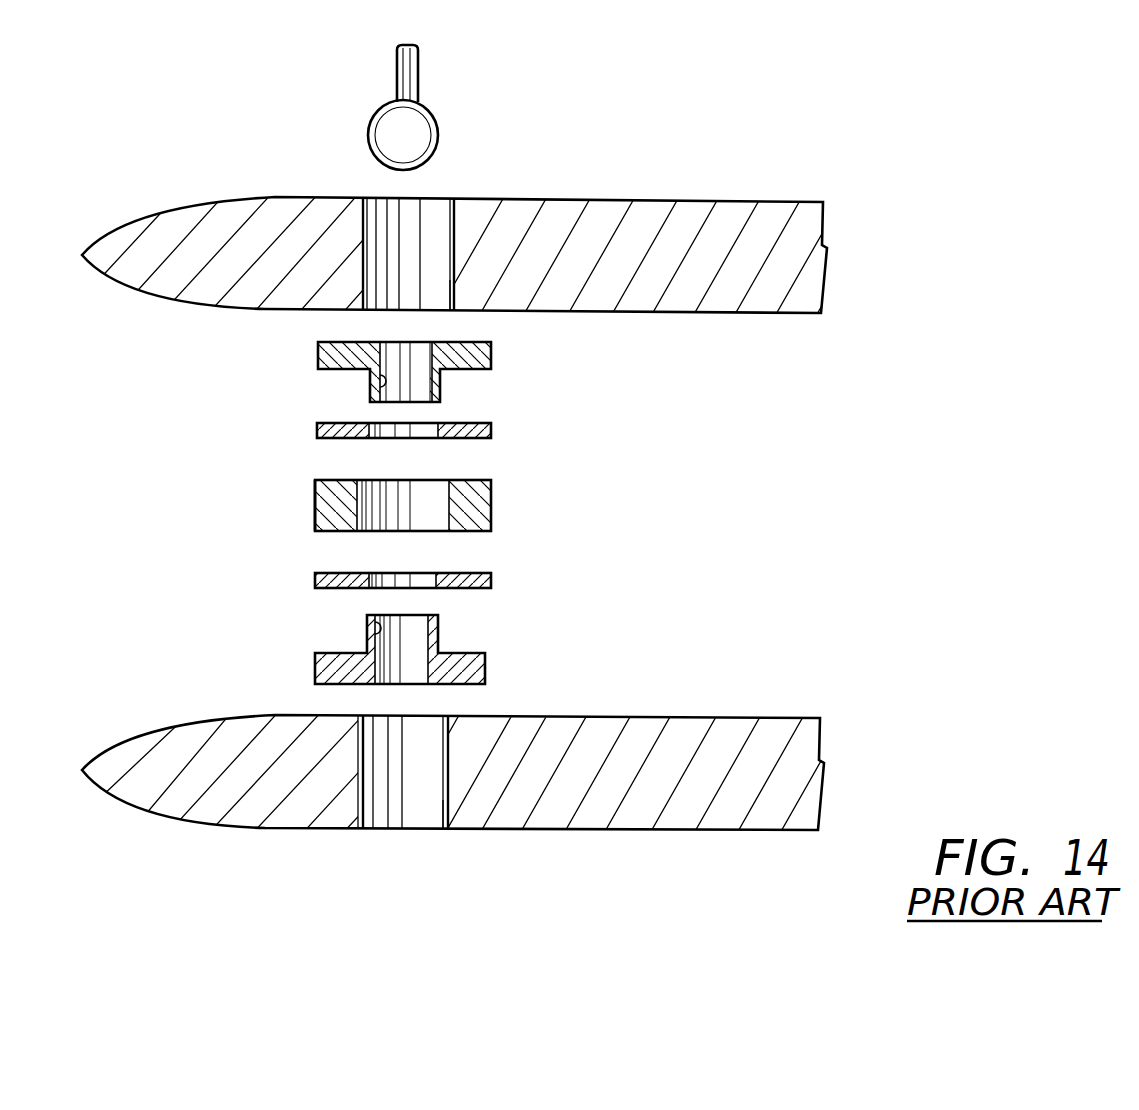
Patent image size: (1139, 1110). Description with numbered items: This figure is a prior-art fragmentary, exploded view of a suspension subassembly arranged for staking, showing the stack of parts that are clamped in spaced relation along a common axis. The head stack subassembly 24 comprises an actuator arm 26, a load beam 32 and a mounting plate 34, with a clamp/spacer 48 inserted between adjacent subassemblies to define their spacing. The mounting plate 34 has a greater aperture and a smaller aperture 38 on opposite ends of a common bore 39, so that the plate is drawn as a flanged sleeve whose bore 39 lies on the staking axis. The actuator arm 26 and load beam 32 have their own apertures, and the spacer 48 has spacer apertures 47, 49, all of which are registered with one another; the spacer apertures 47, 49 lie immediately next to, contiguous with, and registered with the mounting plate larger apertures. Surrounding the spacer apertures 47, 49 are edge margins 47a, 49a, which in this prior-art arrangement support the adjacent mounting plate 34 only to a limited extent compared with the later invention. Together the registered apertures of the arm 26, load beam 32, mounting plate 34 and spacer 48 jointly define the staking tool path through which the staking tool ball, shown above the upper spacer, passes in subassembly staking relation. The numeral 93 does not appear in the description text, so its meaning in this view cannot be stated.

The head stack subassembly 24 is at (316, 500).
The actuator arm 26 is at (491, 519).
The load beam 32 is at (466, 437).
The mounting plate 34 is at (491, 362).
The smaller aperture 38 is at (440, 385).
The common bore 39 is at (382, 384).
The spacer aperture 47 is at (437, 199).
The edge margin 47a is at (361, 197).
The spacer 48 is at (592, 830).
The spacer aperture 49 is at (452, 296).
The edge margin 49a is at (358, 309).
The flanged bushing 93 is at (315, 665).